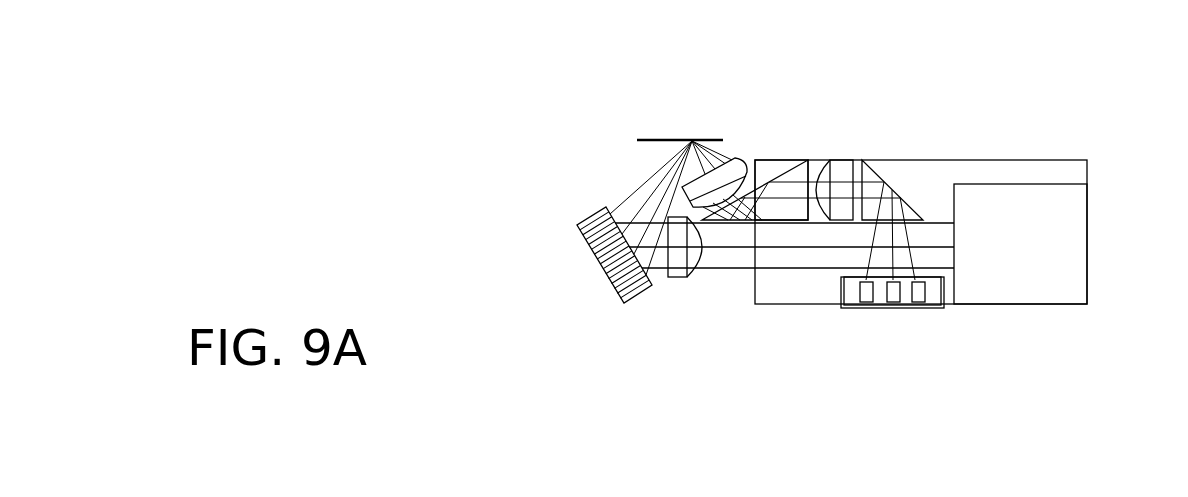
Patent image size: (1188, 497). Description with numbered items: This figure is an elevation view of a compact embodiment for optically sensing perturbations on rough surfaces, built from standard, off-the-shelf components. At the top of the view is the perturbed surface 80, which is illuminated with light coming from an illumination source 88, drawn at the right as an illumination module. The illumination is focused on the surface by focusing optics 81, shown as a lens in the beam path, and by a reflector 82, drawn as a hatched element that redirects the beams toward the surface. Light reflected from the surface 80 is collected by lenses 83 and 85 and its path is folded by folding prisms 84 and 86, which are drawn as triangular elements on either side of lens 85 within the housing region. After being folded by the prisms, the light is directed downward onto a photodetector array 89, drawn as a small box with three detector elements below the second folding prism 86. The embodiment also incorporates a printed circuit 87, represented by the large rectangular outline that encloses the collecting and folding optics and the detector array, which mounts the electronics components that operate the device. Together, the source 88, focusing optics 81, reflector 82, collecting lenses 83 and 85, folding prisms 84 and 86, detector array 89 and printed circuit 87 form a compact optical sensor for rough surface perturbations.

The perturbed surface 80 is at (658, 139).
The focusing optics 81 is at (677, 275).
The reflector 82 is at (593, 240).
The lens 83 is at (730, 152).
The folding prism 84 is at (793, 167).
The lens 85 is at (838, 166).
The folding prism 86 is at (875, 172).
The printed circuit 87 is at (1020, 170).
The illumination source 88 is at (1050, 303).
The photodetector array 89 is at (905, 305).